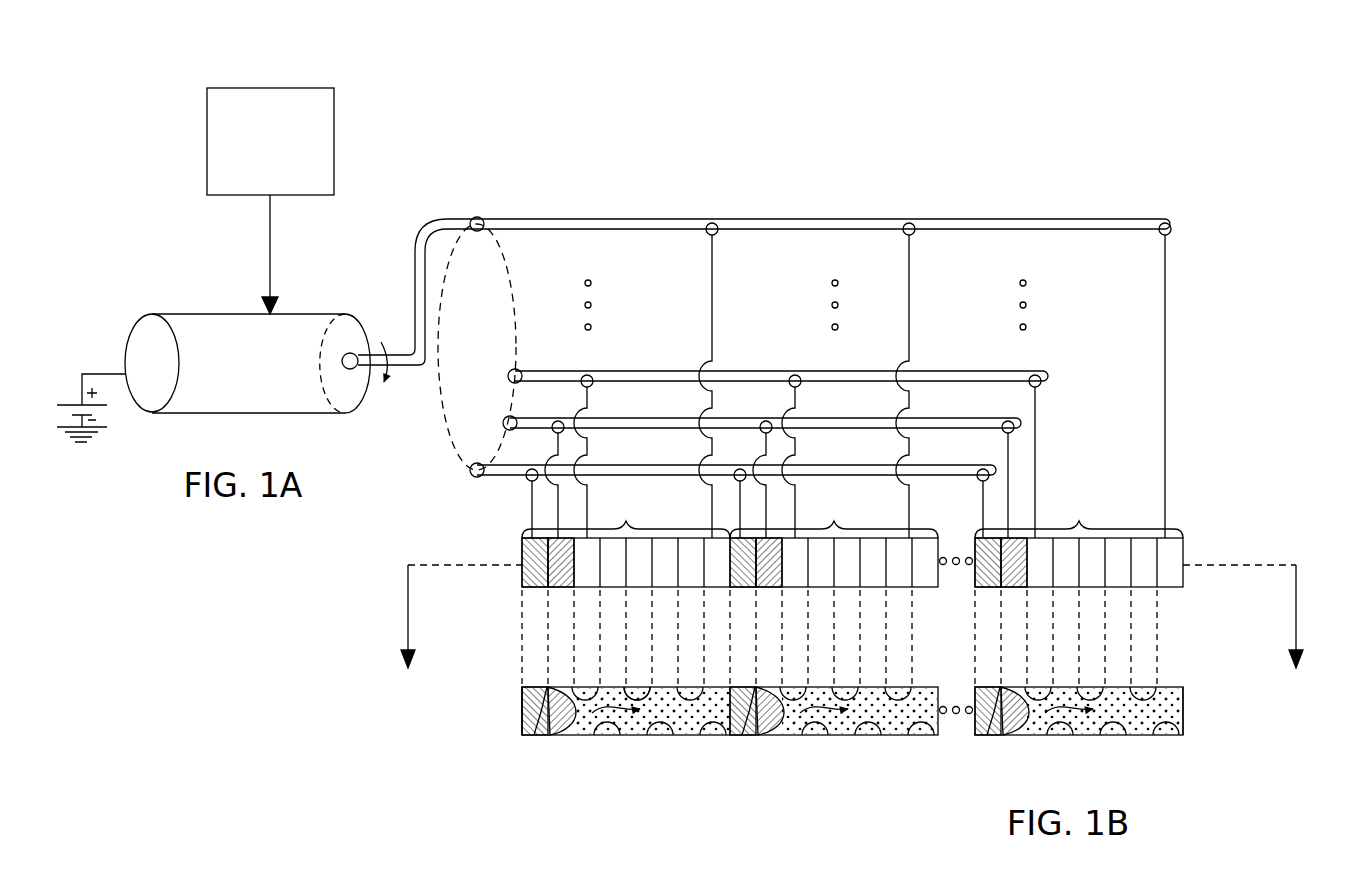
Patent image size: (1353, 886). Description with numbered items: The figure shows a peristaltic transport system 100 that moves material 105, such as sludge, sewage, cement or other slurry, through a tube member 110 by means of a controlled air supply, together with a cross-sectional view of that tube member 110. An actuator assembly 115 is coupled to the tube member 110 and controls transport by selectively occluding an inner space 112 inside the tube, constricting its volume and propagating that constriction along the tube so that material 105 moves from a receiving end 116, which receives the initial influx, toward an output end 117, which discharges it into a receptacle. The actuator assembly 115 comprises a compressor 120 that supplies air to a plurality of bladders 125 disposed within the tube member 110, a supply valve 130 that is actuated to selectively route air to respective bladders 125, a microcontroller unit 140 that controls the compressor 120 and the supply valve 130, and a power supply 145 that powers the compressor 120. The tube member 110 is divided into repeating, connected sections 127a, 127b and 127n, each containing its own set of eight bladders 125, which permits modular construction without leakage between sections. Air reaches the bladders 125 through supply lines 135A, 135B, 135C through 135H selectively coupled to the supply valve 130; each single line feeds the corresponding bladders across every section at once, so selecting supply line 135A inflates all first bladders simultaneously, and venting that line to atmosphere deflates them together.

In FIG. 1A, the peristaltic transport system 100 is at (915, 70).
In FIG. 1B, the material 105 is at (632, 722).
In FIG. 1A, the tube member 110 is at (512, 556).
In FIG. 1B, the tube member 110 is at (505, 752).
In FIG. 1B, the inner space 112 is at (666, 722).
In FIG. 1A, the actuator assembly 115 is at (1190, 360).
In FIG. 1B, the receiving end 116 is at (523, 707).
In FIG. 1B, the output end 117 is at (1183, 707).
In FIG. 1A, the compressor 120 is at (305, 312).
In FIG. 1A, the bladders 125 is at (521, 598).
In FIG. 1B, the bladders 125 is at (563, 723).
In FIG. 1A, the first repeating section 127a is at (626, 516).
In FIG. 1A, the second repeating section 127b is at (834, 516).
In FIG. 1A, the nth repeating section 127n is at (1079, 516).
In FIG. 1A, the supply valve 130 is at (413, 265).
In FIG. 1A, the first supply line 135A is at (498, 477).
In FIG. 1A, the second supply line 135B is at (608, 418).
In FIG. 1A, the third supply line 135C is at (732, 372).
In FIG. 1A, the eighth supply line 135H is at (1100, 218).
In FIG. 1A, the microcontroller unit 140 is at (295, 87).
In FIG. 1A, the power supply 145 is at (70, 403).